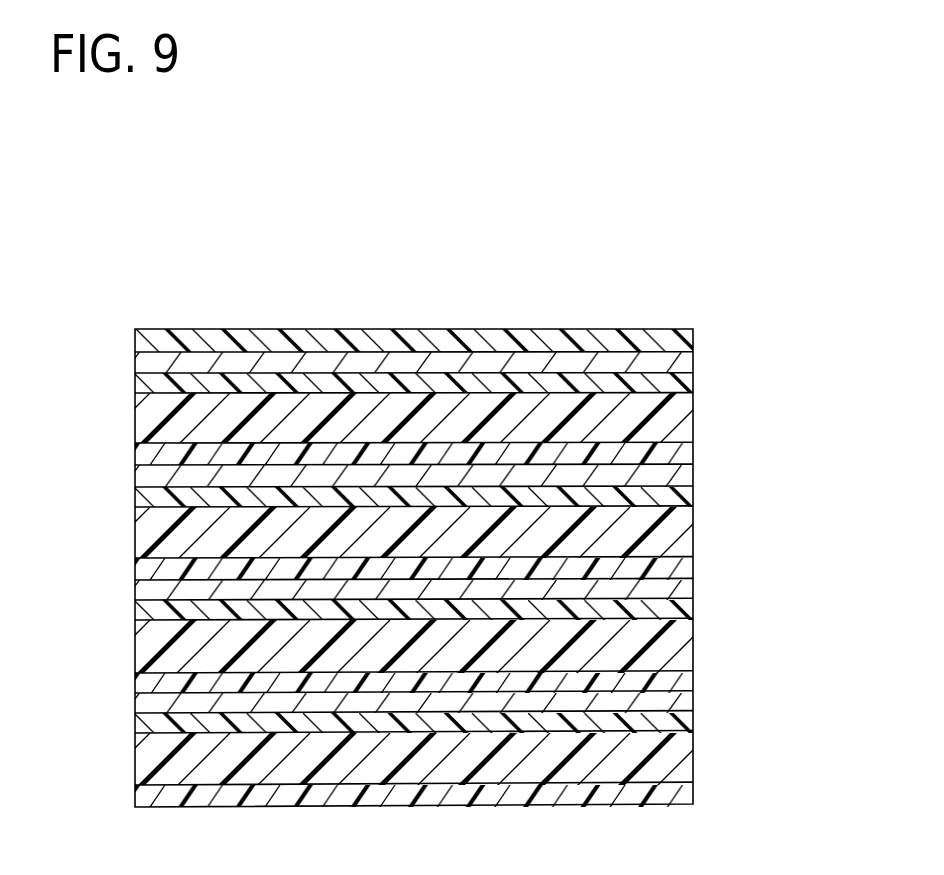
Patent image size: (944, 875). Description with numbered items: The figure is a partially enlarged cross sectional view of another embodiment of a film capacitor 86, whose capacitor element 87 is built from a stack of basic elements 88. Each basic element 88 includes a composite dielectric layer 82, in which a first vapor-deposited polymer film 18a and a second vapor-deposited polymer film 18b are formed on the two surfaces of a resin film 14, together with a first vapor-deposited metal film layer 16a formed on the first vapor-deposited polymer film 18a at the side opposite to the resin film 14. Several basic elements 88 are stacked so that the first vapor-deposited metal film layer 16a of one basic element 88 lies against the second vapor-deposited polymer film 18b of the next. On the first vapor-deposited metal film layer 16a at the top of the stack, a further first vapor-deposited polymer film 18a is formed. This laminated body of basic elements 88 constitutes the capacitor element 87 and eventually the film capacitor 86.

The film capacitor 86 is at (487, 258).
The capacitor element 87 is at (317, 327).
The basic element 88 is at (123, 353).
The composite dielectric layer 82 is at (788, 327).
The first vapor-deposited polymer film 18a is at (488, 333).
The resin film 14 is at (675, 410).
The second vapor-deposited polymer film 18b is at (672, 453).
The first vapor-deposited metal film layer 16a is at (587, 352).